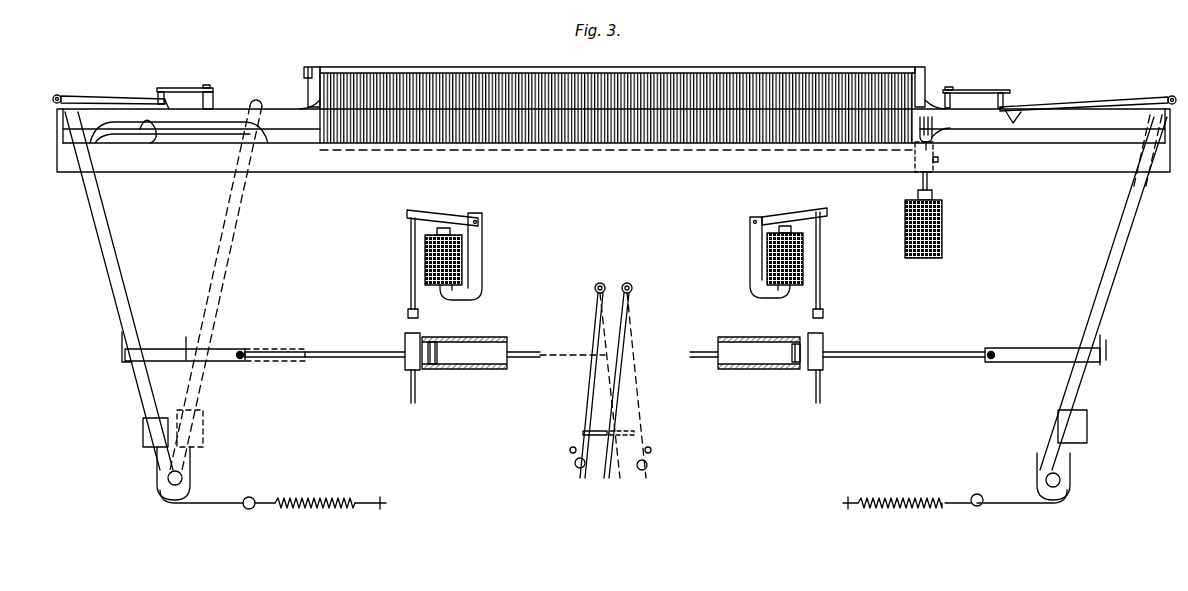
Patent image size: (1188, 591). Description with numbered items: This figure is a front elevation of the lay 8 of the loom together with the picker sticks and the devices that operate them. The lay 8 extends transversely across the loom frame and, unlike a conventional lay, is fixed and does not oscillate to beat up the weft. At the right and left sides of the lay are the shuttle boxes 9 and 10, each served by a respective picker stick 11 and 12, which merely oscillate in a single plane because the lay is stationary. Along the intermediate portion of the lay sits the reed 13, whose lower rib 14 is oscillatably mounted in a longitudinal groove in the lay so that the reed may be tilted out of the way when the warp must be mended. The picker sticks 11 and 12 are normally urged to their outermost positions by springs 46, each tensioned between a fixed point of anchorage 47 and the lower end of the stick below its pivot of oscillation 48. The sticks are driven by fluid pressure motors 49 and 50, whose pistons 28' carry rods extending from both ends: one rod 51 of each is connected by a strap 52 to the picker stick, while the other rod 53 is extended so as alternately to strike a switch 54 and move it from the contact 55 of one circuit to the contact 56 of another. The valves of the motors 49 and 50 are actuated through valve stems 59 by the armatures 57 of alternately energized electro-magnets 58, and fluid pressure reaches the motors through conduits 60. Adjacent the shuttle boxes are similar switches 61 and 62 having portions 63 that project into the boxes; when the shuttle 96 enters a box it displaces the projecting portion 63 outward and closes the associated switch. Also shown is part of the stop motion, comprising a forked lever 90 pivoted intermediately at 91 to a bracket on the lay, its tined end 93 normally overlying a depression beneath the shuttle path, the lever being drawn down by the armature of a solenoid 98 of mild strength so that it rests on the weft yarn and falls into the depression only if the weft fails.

The lay 8 is at (703, 165).
The shuttle box 9 is at (1086, 130).
The shuttle box 10 is at (131, 132).
The picker stick 11 is at (1112, 305).
The picker stick 12 is at (98, 258).
The reed 13 is at (838, 80).
The lower rib 14 is at (611, 152).
The piston 28' is at (618, 370).
The spring 46 is at (338, 508).
The fixed point of anchorage 47 is at (388, 504).
The pivot of oscillation 48 is at (183, 475).
The fluid pressure motor 49 is at (770, 370).
The fluid pressure motor 50 is at (490, 370).
The rod 51 is at (340, 351).
The strap 52 is at (236, 347).
The rod 53 is at (530, 351).
The switch 54 is at (584, 395).
The contact 55 is at (576, 466).
The contact 56 is at (648, 466).
The armature 57 is at (437, 210).
The electro-magnet 58 is at (463, 257).
The valve stem 59 is at (411, 262).
The conduit 60 is at (416, 400).
The switch 61 is at (1012, 108).
The switch 62 is at (142, 93).
The projecting portion 63 is at (165, 130).
The forked lever 90 is at (942, 133).
The pivot 91 is at (940, 159).
The tined end 93 is at (934, 122).
The shuttle 96 is at (220, 130).
The solenoid 98 is at (942, 238).